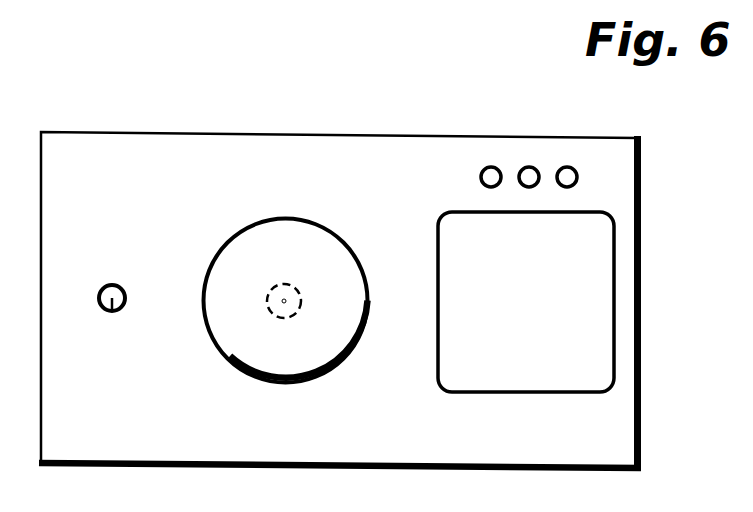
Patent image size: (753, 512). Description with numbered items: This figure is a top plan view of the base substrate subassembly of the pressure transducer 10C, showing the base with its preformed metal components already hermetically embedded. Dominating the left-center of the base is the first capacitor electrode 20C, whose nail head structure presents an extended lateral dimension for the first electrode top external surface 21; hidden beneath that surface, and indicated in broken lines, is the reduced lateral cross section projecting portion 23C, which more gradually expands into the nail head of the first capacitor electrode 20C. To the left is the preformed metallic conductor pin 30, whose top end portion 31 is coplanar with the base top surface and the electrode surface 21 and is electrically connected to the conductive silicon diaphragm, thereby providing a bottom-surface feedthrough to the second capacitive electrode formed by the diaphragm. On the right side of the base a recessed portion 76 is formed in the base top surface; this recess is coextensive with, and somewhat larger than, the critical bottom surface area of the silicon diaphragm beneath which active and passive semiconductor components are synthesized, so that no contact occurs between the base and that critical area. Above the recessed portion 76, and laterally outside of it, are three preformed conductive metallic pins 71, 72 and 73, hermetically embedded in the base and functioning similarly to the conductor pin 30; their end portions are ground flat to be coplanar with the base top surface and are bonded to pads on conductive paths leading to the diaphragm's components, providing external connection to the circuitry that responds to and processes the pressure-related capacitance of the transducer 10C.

The pressure transducer 10C is at (368, 73).
The first capacitor electrode 20C is at (242, 347).
The first electrode top external surface 21 is at (278, 245).
The projecting portion 23C is at (292, 282).
The metallic conductor pin 30 is at (112, 284).
The top end portion 31 is at (112, 312).
The conductive metallic pin 71 is at (567, 166).
The conductive metallic pin 72 is at (491, 166).
The conductive metallic pin 73 is at (529, 166).
The recessed portion 76 is at (590, 272).